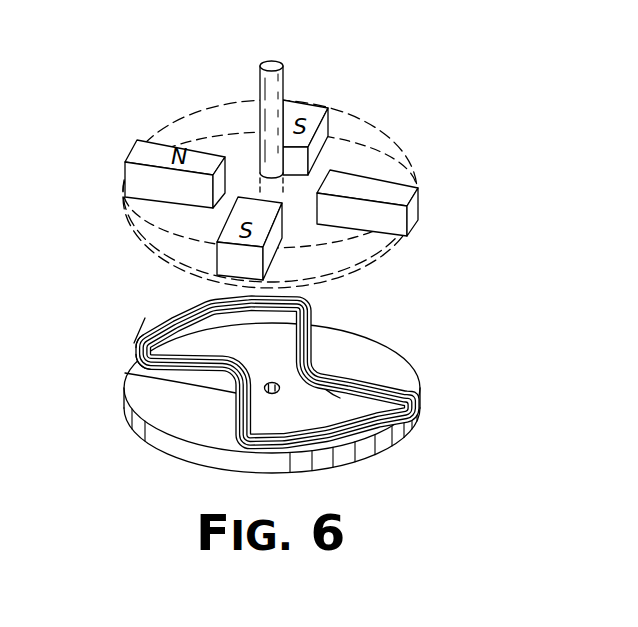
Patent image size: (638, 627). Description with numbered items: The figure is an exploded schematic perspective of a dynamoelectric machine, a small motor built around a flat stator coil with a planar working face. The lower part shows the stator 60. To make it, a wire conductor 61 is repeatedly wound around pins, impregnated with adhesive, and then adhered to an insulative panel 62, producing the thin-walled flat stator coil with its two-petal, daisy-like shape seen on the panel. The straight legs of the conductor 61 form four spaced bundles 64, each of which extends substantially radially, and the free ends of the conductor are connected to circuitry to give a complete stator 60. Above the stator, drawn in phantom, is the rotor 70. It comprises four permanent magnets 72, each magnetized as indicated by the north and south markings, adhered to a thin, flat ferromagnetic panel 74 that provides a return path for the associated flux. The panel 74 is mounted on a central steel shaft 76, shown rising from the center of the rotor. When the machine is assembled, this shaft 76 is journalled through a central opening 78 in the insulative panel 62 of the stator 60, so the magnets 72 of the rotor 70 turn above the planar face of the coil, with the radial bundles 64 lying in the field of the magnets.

The stator 60 is at (413, 370).
The wire conductor 61 is at (131, 364).
The insulative panel 62 is at (173, 448).
The bundles 64 is at (231, 427).
The rotor 70 is at (403, 141).
The permanent magnets 72 is at (413, 215).
The ferromagnetic panel 74 is at (375, 263).
The central steel shaft 76 is at (283, 73).
The central opening 78 is at (270, 382).